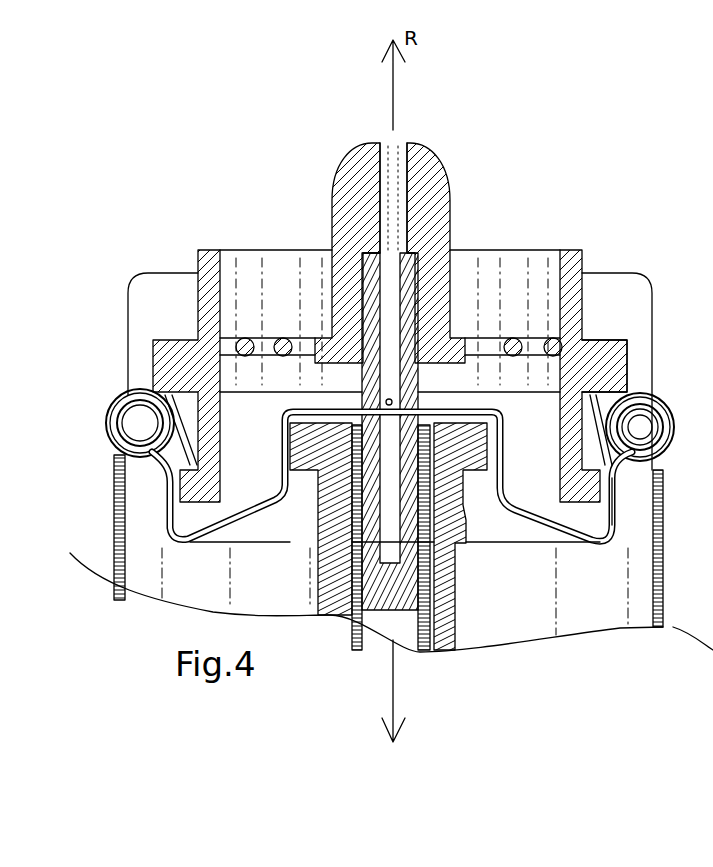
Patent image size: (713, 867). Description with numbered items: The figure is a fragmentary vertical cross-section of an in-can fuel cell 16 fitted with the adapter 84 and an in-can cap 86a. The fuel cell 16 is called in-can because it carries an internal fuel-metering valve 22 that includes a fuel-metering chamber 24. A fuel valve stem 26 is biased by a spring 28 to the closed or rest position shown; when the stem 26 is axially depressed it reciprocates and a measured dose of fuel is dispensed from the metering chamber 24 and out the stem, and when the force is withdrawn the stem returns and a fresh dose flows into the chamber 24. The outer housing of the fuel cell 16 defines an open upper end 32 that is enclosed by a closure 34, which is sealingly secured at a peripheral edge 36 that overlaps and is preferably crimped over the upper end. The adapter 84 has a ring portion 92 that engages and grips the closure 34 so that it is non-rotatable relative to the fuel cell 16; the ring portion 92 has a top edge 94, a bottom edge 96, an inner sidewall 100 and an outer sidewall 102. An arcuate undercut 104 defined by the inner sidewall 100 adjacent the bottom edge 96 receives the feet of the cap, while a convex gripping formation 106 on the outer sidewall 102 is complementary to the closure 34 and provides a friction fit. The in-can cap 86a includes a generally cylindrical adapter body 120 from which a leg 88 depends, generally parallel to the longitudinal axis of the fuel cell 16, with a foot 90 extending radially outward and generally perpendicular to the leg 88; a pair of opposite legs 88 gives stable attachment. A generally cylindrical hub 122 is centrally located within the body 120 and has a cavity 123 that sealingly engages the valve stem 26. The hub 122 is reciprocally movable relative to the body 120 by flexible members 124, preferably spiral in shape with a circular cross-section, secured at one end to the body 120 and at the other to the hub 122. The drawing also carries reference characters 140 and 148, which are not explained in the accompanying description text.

The fuel cell 16 is at (622, 690).
The fuel-metering valve 22 is at (503, 616).
The fuel-metering chamber 24 is at (320, 562).
The fuel valve stem 26 is at (420, 268).
The spring 28 is at (363, 625).
The open upper end 32 is at (655, 437).
The closure 34 is at (101, 382).
The peripheral edge 36 is at (650, 400).
The adapter 84 is at (645, 512).
The in-can cap 86a is at (172, 247).
The leg portion 88 is at (228, 445).
The foot 90 is at (120, 412).
The ring portion 92 is at (590, 400).
The top edge 94 is at (200, 470).
The bottom edge 96 is at (166, 495).
The inner sidewall 100 is at (145, 530).
The outer sidewall 102 is at (630, 432).
The arcuate undercut 104 is at (593, 507).
The convex gripping formation 106 is at (128, 462).
The adapter body 120 is at (568, 250).
The hub 122 is at (360, 168).
The cavity 123 is at (415, 277).
The flexible member 124 is at (247, 338).
The housing 140 is at (712, 248).
The cover 148 is at (712, 226).